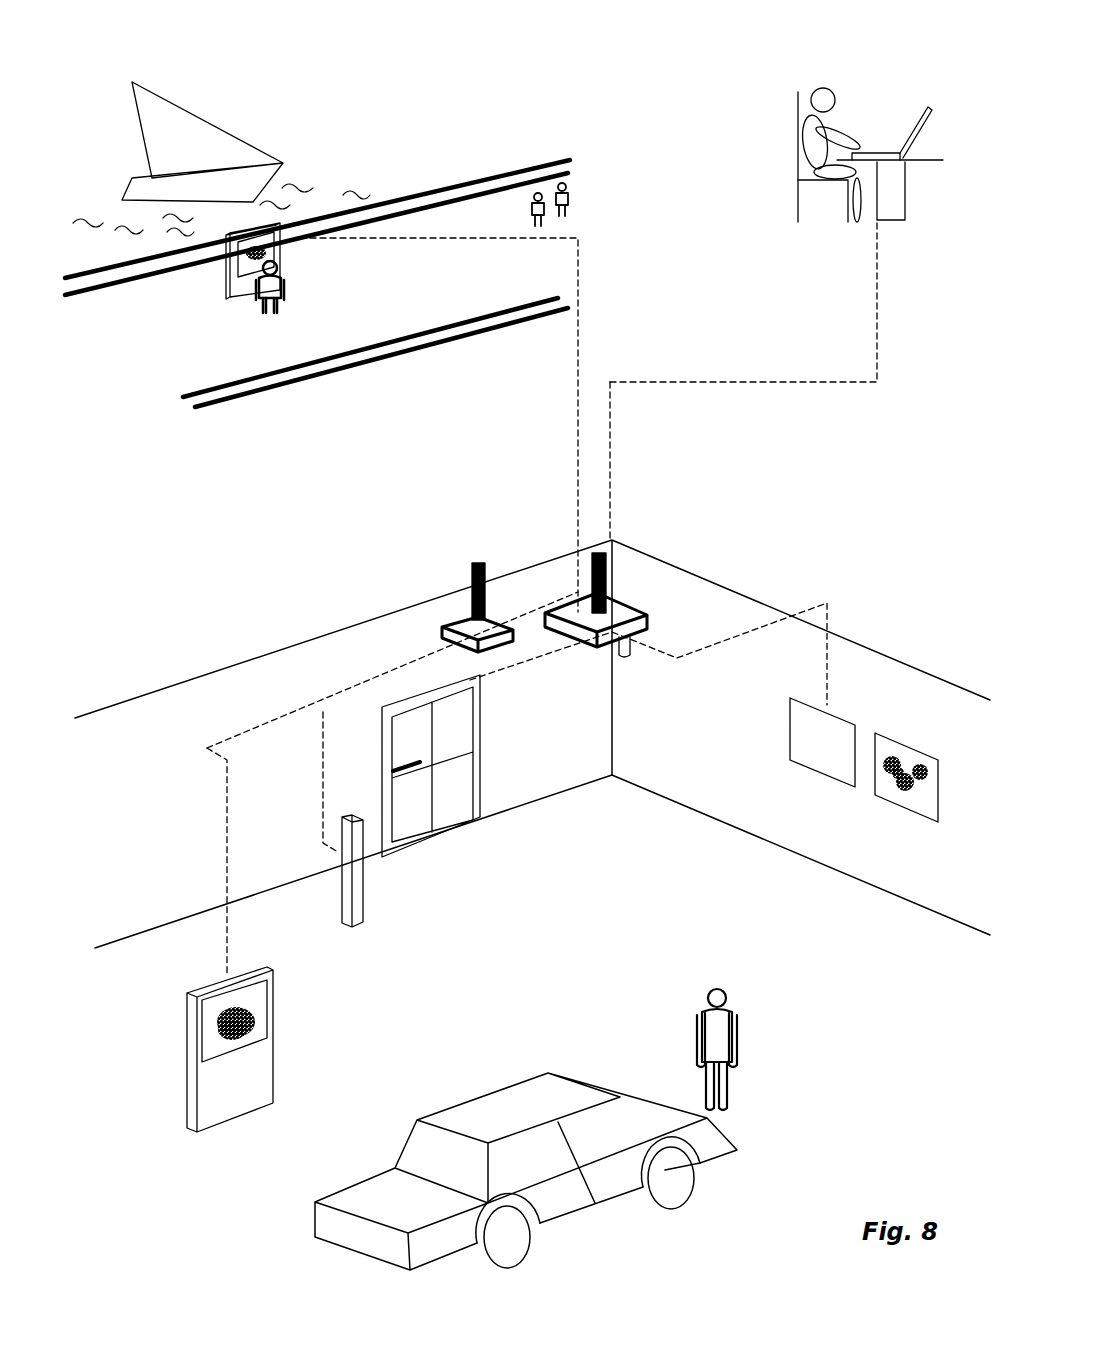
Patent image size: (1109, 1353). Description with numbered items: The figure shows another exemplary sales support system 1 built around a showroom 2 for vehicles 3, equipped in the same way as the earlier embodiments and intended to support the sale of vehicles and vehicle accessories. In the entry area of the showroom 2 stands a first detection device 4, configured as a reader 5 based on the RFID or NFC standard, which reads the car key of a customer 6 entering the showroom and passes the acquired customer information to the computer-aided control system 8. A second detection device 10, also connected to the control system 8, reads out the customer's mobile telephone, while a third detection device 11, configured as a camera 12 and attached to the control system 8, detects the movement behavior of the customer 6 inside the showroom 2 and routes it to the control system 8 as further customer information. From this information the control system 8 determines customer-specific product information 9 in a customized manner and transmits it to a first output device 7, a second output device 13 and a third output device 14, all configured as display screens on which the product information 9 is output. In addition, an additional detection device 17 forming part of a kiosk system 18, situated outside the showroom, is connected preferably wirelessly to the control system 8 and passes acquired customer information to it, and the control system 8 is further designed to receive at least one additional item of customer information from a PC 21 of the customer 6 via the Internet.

The sales support system 1 is at (748, 527).
The showroom 2 is at (288, 592).
The vehicle 3 is at (458, 1088).
The first detection device 4 is at (372, 878).
The reader 5 is at (348, 812).
The customer 6 is at (680, 1008).
The first output device 7 is at (176, 1012).
The control system 8 is at (613, 610).
The customer-specific product information 9 is at (250, 1008).
The second detection device 10 is at (436, 643).
The third detection device 11 is at (628, 676).
The camera 12 is at (630, 646).
The second output device 13 is at (797, 690).
The third output device 14 is at (906, 735).
The additional detection device 17 is at (260, 253).
The kiosk system 18 is at (292, 216).
The PC 21 is at (882, 153).